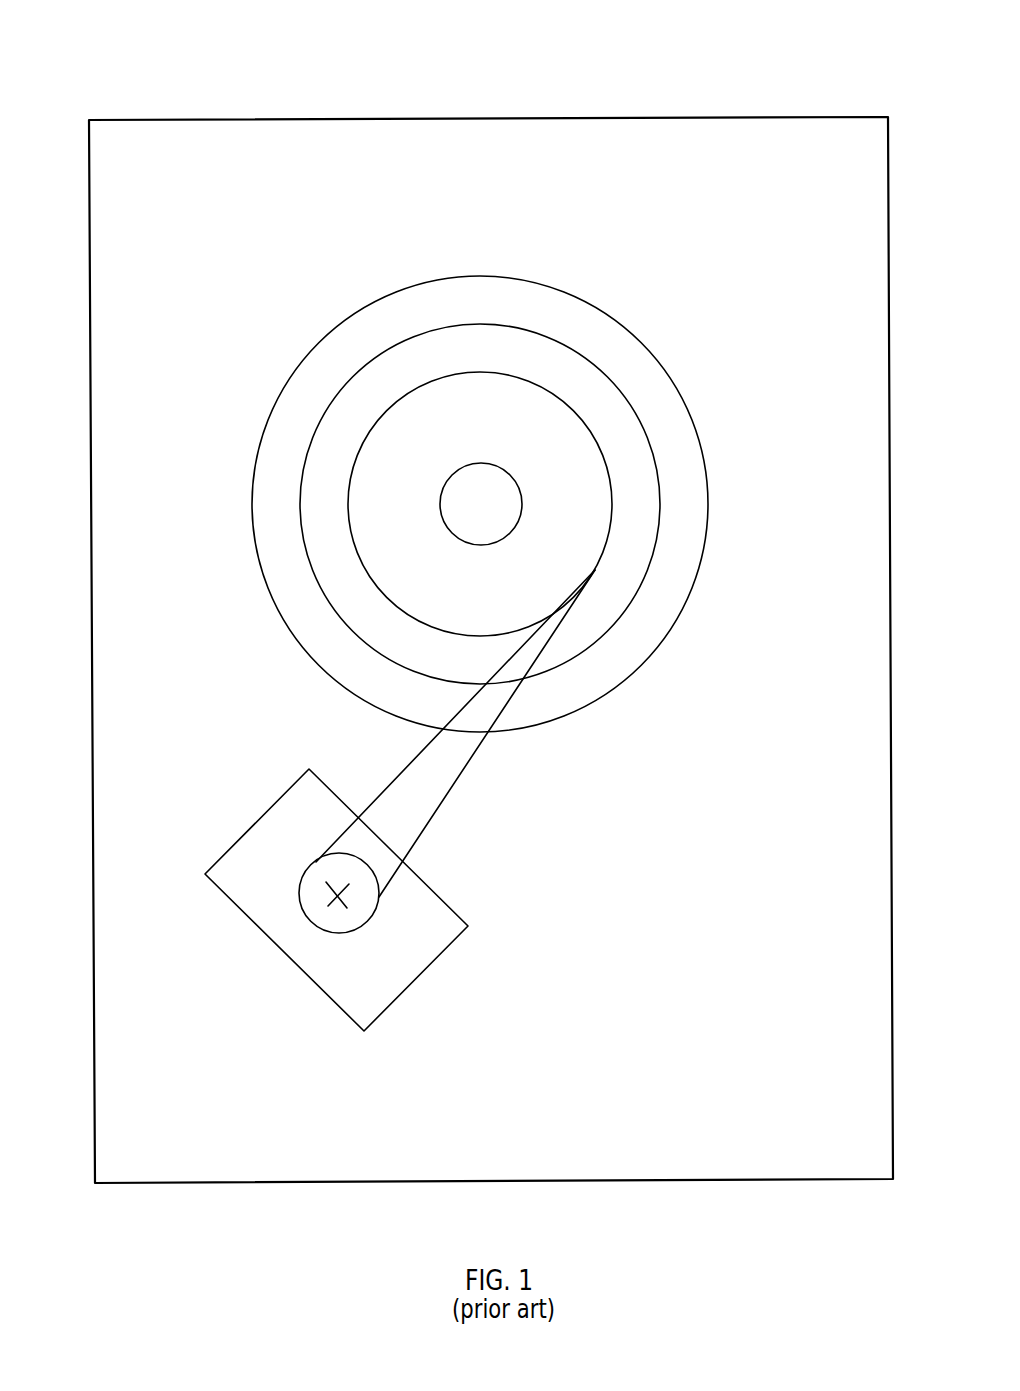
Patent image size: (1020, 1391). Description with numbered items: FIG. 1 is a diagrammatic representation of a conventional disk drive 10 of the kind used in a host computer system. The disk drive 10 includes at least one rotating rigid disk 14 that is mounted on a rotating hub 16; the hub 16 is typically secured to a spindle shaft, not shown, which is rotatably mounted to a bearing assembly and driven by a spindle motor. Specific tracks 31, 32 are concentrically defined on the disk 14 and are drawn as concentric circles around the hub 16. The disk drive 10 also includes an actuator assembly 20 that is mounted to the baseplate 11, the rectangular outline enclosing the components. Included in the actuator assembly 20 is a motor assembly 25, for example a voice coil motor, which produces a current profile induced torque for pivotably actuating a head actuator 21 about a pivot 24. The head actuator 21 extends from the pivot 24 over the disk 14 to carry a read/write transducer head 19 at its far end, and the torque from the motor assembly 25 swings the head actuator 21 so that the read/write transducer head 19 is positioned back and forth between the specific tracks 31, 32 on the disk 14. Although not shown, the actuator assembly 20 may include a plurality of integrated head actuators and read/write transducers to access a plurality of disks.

The disk drive 10 is at (693, 103).
The baseplate 11 is at (491, 695).
The rotating rigid disk 14 is at (440, 292).
The rotating hub 16 is at (463, 487).
The read/write transducer head 19 is at (595, 570).
The actuator assembly 20 is at (275, 752).
The head actuator 21 is at (447, 773).
The pivot 24 is at (330, 911).
The motor assembly 25 is at (420, 949).
The track 31 is at (582, 415).
The track 32 is at (542, 330).